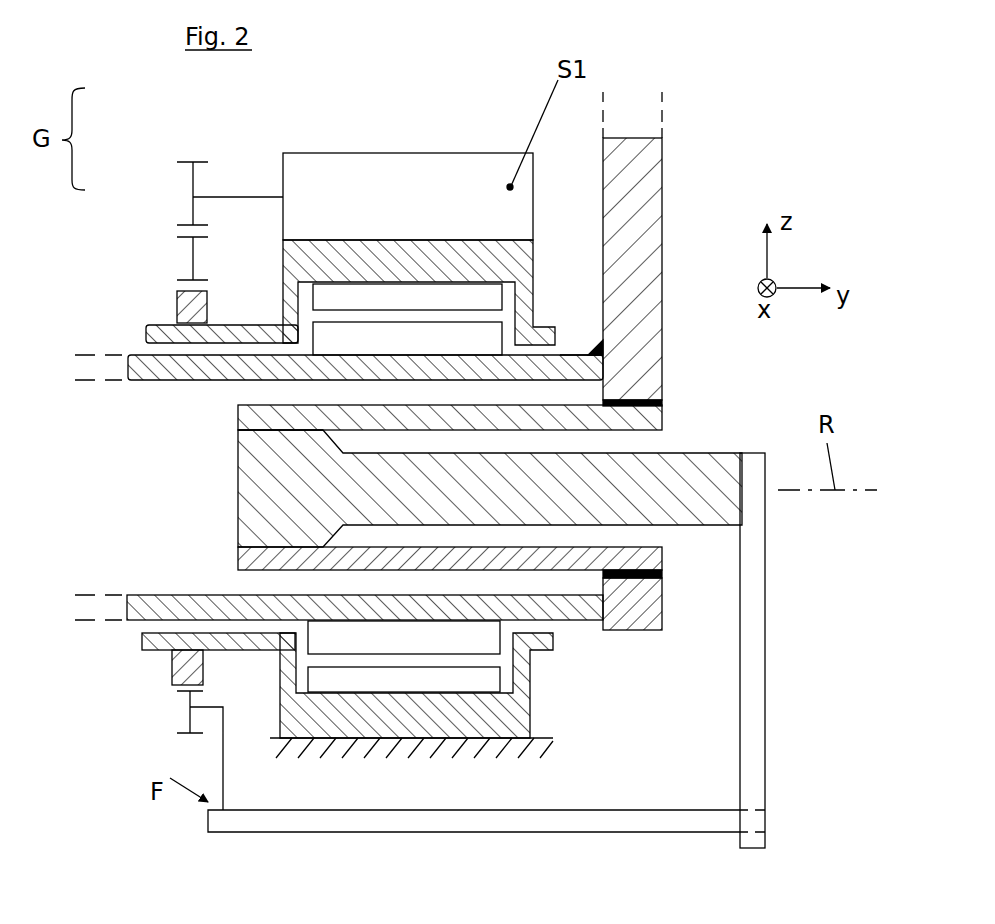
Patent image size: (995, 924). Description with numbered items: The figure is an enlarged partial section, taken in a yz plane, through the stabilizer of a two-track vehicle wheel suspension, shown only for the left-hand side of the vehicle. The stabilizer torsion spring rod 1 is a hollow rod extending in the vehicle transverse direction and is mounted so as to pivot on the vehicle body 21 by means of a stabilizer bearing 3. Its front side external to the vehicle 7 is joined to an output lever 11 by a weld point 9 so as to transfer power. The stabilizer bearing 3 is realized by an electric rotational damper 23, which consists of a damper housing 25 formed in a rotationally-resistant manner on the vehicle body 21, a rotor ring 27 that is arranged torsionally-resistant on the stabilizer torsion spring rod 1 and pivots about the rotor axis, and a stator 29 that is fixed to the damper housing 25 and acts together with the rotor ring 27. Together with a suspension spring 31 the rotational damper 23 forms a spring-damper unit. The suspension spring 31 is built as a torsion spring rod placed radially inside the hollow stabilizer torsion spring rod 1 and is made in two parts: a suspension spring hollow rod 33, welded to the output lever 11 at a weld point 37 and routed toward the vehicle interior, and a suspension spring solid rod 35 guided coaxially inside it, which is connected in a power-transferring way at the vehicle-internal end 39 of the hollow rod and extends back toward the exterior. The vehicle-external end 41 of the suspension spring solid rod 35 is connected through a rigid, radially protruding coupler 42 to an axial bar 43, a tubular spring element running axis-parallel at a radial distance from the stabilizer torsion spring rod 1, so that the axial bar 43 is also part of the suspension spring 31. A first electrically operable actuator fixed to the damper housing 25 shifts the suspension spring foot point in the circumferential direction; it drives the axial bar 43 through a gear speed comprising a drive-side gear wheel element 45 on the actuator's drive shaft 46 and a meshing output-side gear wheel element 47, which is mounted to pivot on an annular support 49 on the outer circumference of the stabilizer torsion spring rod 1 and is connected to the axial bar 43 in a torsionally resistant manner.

The stabilizer torsion spring rod 1 is at (138, 355).
The stabilizer bearing 3 is at (442, 716).
The vehicle-external front side 7 is at (580, 356).
The weld point 9 is at (601, 343).
The output lever 11 is at (665, 188).
The vehicle body 21 is at (268, 760).
The electric rotational damper 23 is at (419, 213).
The damper housing 25 is at (350, 262).
The rotor ring 27 is at (440, 343).
The stator 29 is at (403, 298).
The suspension spring 31 is at (424, 482).
The suspension spring hollow rod 33 is at (252, 413).
The suspension spring solid rod 35 is at (449, 500).
The weld point 37 is at (648, 392).
The vehicle-internal end 39 is at (238, 433).
The vehicle-external end 41 is at (733, 454).
The coupler 42 is at (765, 617).
The axial bar 43 is at (297, 832).
The drive-side gear wheel element 45 is at (192, 198).
The drive shaft 46 is at (248, 195).
The output-side gear wheel element 47 is at (190, 263).
The annular support 49 is at (172, 665).